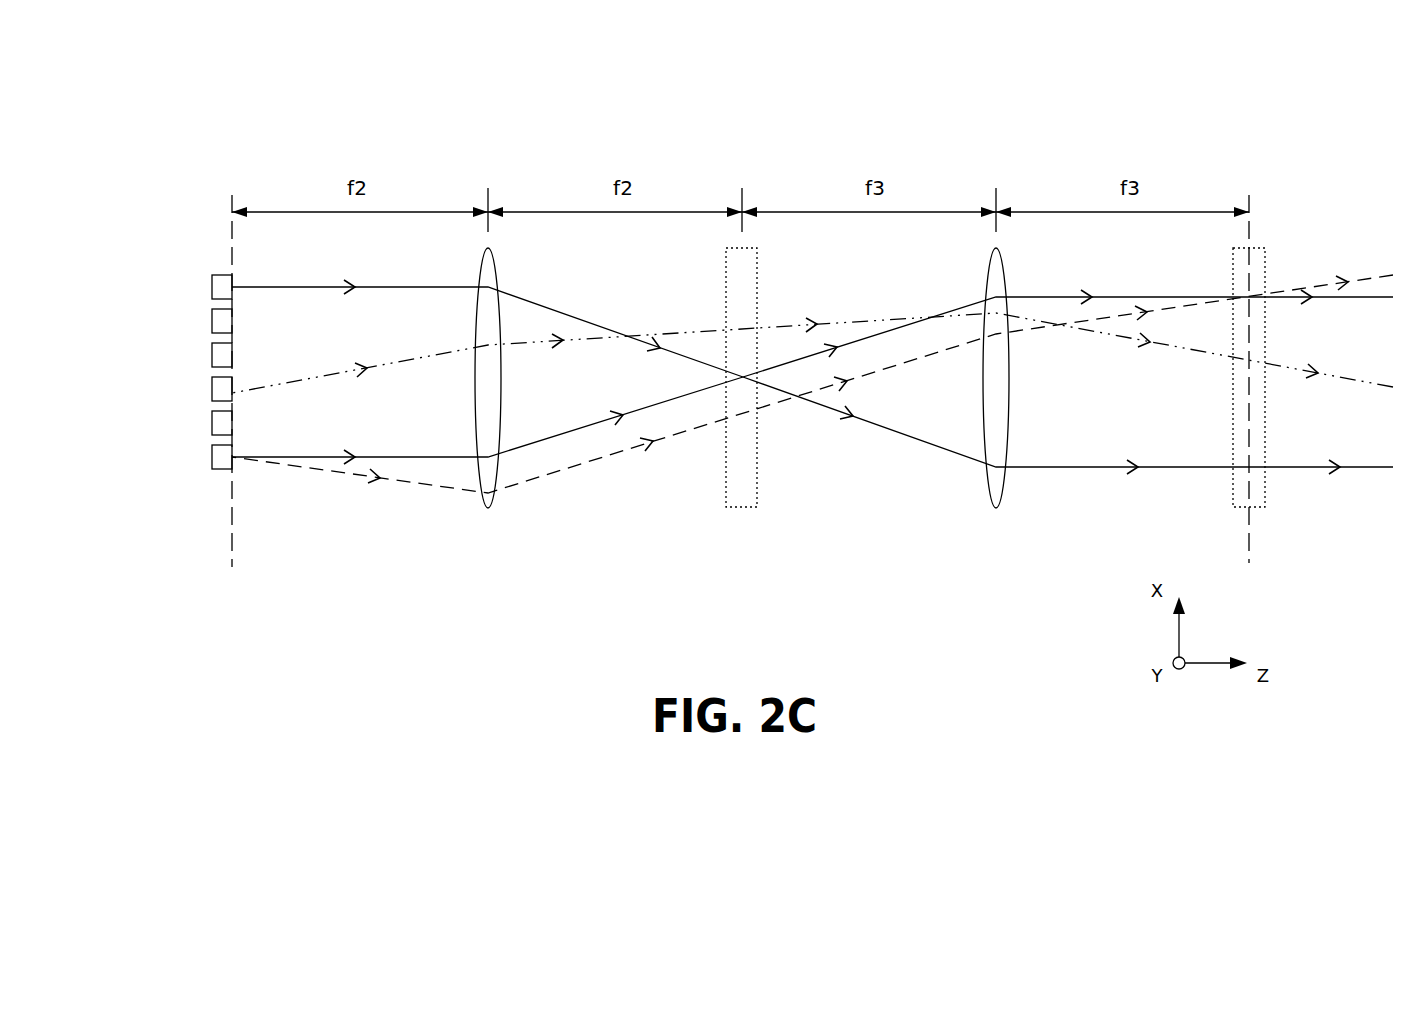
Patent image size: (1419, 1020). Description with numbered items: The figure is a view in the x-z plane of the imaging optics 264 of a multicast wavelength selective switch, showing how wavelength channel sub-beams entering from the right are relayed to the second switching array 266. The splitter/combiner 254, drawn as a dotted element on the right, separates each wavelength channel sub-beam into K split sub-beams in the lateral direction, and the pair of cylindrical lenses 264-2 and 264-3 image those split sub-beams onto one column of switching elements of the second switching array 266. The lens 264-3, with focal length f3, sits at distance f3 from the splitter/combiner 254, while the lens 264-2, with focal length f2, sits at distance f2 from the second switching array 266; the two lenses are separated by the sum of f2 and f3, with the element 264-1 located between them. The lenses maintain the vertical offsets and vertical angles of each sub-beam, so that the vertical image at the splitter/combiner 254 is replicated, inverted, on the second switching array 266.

The imaging optics 264 is at (668, 332).
The lens 264-1 is at (740, 400).
The lens 264-2 is at (493, 400).
The lens 264-3 is at (988, 400).
The second switching array 266 is at (188, 277).
The splitter/combiner 254 is at (1276, 368).